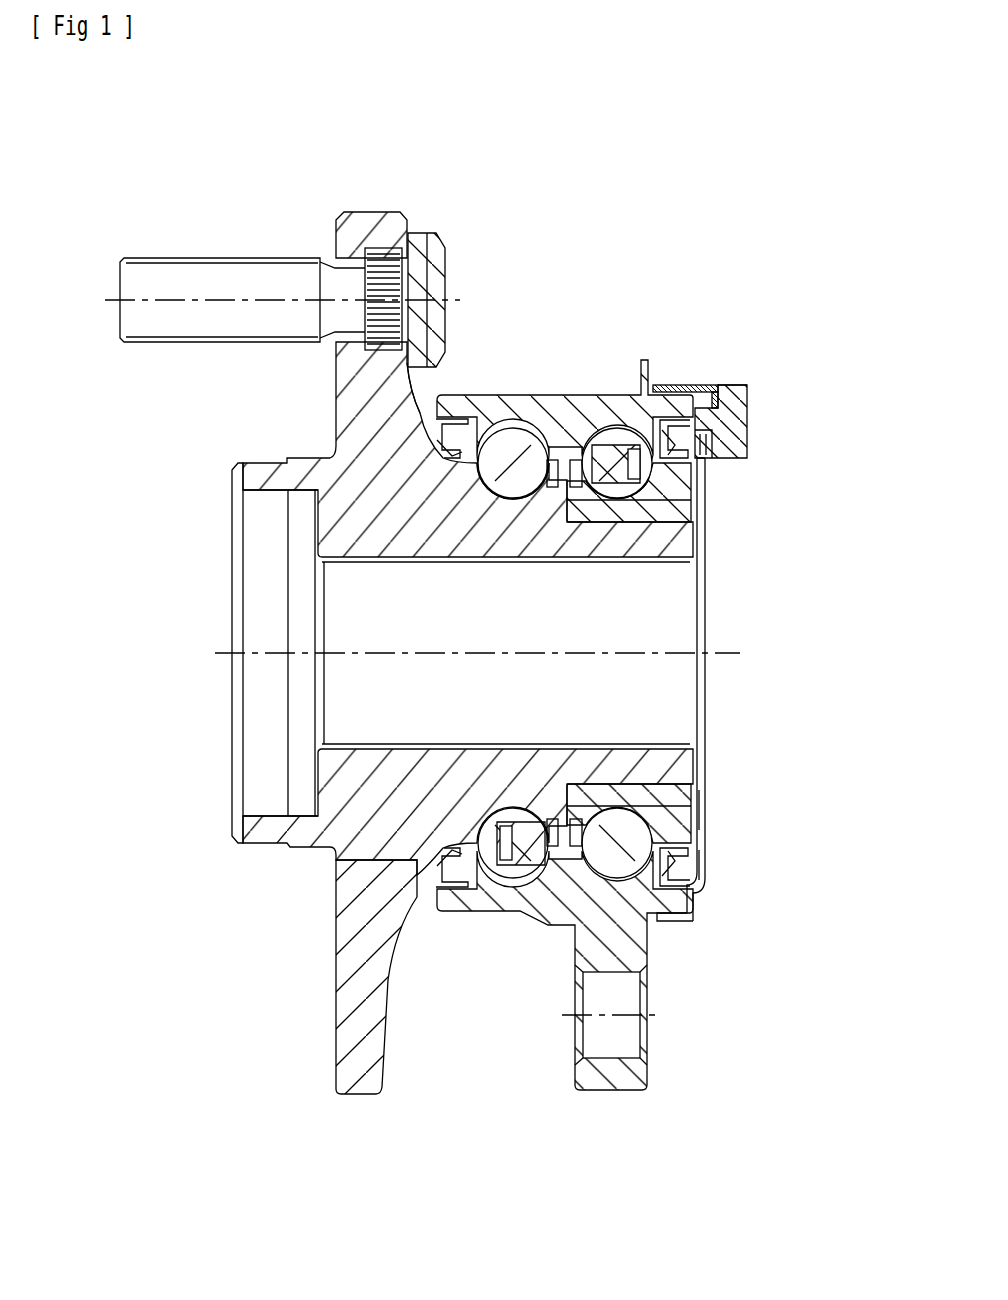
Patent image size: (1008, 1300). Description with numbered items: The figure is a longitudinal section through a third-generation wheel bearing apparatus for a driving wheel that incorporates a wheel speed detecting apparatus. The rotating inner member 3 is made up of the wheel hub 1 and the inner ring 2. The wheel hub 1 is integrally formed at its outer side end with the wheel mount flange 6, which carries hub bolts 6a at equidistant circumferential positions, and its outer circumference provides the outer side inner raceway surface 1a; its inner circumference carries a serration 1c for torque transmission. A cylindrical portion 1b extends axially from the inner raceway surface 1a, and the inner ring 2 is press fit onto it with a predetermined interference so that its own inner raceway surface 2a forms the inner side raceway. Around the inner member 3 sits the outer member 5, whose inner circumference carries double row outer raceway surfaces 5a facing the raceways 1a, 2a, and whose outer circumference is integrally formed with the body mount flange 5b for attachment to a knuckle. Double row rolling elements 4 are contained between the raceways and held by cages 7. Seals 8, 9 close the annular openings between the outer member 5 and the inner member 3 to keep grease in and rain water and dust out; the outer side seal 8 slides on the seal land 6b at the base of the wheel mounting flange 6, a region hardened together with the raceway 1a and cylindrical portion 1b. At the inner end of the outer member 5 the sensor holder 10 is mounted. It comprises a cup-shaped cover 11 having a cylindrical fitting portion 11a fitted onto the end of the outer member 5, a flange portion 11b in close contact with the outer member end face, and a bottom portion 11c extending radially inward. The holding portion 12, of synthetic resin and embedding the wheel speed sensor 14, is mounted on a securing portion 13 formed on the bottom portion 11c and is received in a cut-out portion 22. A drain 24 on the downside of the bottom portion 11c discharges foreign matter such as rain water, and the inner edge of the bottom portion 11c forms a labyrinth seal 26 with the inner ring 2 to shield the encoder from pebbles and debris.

The wheel hub 1 is at (350, 492).
The inner raceway surface 1a is at (505, 480).
The cylindrical portion 1b is at (640, 528).
The serration 1c is at (382, 566).
The inner ring 2 is at (667, 493).
The inner raceway surface 2a is at (612, 497).
The inner member 3 is at (317, 537).
The rolling elements 4 is at (515, 873).
The outer member 5 is at (574, 398).
The outer raceway surfaces 5a is at (494, 445).
The body mount flange 5b is at (604, 1089).
The wheel mount flange 6 is at (383, 232).
The hub bolts 6a is at (224, 290).
The seal land 6b is at (458, 427).
The cages 7 is at (580, 822).
The seal 8 is at (420, 877).
The seal 9 is at (668, 893).
The sensor holder 10 is at (739, 380).
The cover 11 is at (771, 737).
The cylindrical fitting portion 11a is at (665, 921).
The flange portion 11b is at (700, 900).
The bottom portion 11c is at (708, 880).
The holding portion 12 is at (735, 433).
The securing portion 13 is at (748, 388).
The wheel speed sensor 14 is at (718, 452).
The cut-out portion 22 is at (702, 397).
The drain 24 is at (708, 862).
The labyrinth seal 26 is at (703, 812).